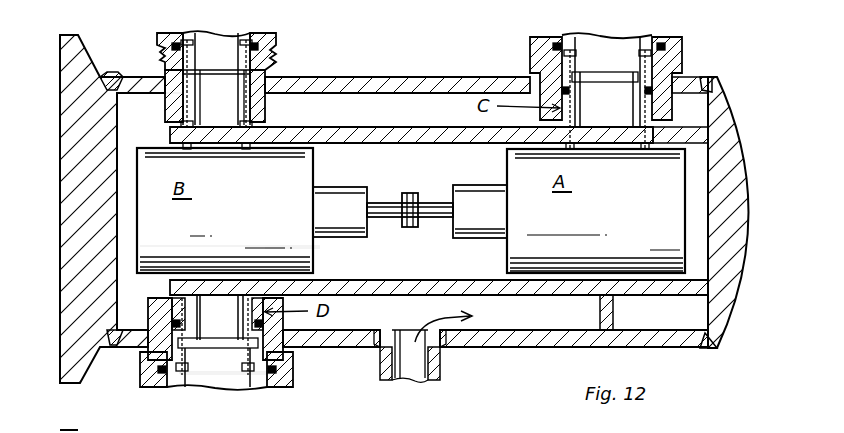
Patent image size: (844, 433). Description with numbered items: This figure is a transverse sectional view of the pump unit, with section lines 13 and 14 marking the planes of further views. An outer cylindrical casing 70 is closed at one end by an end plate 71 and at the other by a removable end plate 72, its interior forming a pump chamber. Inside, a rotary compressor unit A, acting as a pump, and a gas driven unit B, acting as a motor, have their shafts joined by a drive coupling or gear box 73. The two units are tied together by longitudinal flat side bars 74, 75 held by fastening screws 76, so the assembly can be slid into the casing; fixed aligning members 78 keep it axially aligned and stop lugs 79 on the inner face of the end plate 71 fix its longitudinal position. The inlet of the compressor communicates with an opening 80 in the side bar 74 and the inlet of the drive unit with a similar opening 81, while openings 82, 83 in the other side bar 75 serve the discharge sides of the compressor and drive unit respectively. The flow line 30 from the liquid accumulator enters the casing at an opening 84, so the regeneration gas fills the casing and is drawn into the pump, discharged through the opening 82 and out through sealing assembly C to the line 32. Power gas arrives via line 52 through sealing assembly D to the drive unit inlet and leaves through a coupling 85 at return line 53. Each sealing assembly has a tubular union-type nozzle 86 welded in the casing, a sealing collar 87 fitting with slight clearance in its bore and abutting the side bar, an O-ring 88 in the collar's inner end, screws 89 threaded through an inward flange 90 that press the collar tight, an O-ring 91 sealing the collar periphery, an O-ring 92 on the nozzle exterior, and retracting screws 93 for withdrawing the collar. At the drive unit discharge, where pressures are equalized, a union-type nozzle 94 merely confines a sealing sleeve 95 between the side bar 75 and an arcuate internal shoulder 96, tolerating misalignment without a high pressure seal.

The section line 13- 13 is at (50, 122).
The section line 14- 14 is at (350, 420).
The flow line 30 is at (440, 365).
The line 32 is at (530, 50).
The line 52 is at (148, 368).
The return line 53 is at (165, 45).
The outer cylindrical casing 70 is at (418, 80).
The end plate 71 is at (745, 225).
The removable end plate 72 is at (72, 230).
The drive coupling or gear box 73 is at (413, 192).
The side bar 74 is at (418, 280).
The side bar 75 is at (416, 127).
The fastening screws 76 is at (256, 137).
The fixed aligning members 78 is at (620, 318).
The stop lugs 79 is at (698, 147).
The opening 80 is at (620, 262).
The opening 81 is at (226, 262).
The opening 82 is at (605, 148).
The opening 83 is at (213, 148).
The opening 84 is at (395, 330).
The coupling 85 is at (165, 82).
The union-type nozzle 86 is at (157, 298).
The sealing collar 87 is at (245, 325).
The O-ring 88 is at (262, 300).
The screws 89 is at (186, 372).
The flange 90 is at (246, 372).
The O-ring 91 is at (160, 306).
The O-ring 92 is at (280, 372).
The retracting screws 93 is at (250, 362).
The union-type nozzle 94 is at (165, 108).
The sealing sleeve 95 is at (240, 108).
The internal shoulder 96 is at (270, 55).